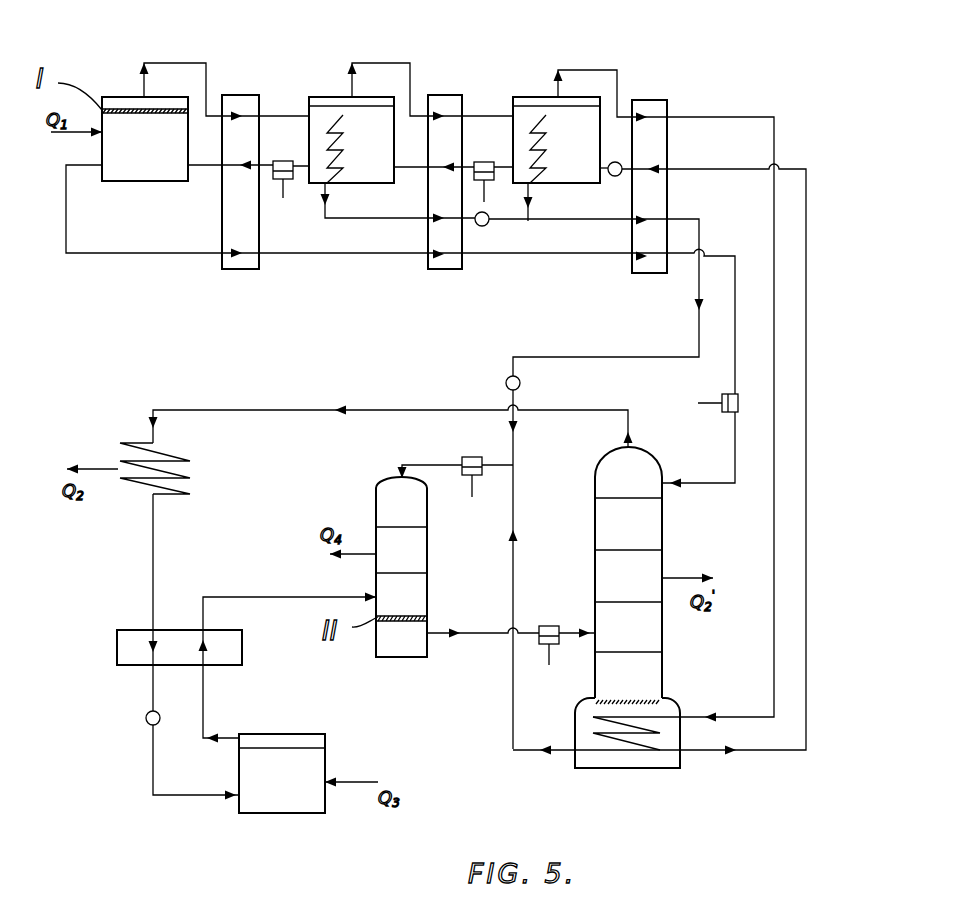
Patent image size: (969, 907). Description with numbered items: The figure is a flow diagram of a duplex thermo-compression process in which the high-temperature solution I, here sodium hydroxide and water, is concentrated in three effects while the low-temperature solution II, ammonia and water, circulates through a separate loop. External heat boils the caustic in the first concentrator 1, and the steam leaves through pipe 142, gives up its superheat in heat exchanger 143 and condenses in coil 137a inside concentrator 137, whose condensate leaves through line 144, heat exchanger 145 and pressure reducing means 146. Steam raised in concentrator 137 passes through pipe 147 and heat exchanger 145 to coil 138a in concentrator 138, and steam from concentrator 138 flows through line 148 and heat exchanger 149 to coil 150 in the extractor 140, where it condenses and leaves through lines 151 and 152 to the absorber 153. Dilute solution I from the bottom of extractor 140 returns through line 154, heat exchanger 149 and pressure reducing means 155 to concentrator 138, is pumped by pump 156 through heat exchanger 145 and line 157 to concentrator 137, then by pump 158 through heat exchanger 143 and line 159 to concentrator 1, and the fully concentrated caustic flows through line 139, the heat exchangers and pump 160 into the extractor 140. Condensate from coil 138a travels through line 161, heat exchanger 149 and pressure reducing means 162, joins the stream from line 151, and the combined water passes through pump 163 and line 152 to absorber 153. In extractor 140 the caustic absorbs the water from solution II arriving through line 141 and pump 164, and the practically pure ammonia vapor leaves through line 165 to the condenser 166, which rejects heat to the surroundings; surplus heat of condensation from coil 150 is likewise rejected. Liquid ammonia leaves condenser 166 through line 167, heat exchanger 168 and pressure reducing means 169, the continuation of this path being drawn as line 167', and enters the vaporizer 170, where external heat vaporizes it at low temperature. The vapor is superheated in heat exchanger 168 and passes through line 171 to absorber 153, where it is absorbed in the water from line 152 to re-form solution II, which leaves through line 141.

The first concentrator 1 is at (145, 139).
The second concentrator 137 is at (351, 140).
The steam coil 137a is at (358, 148).
The third concentrator 138 is at (556, 140).
The steam coil 138a is at (562, 148).
The solution line 139 is at (155, 253).
The extractor 140 is at (628, 572).
The solution II line 141 is at (487, 633).
The steam pipe 142 is at (189, 64).
The heat exchanger 143 is at (240, 182).
The condensate line 144 is at (388, 218).
The heat exchanger 145 is at (447, 182).
The pressure reducing means 146 is at (487, 225).
The steam pipe 147 is at (386, 56).
The steam line 148 is at (592, 66).
The heat exchanger 149 is at (650, 186).
The steam coil 150 is at (608, 735).
The condensate line 151 is at (510, 692).
The condensate line 152 is at (420, 458).
The absorber 153 is at (401, 567).
The dilute solution line 154 is at (732, 169).
The pressure reducing means 155 is at (618, 156).
The pump 156 is at (488, 154).
The solution line 157 is at (414, 160).
The pump 158 is at (285, 158).
The solution line 159 is at (207, 160).
The pump 160 is at (718, 392).
The condensate line 161 is at (606, 357).
The pressure reducing means 162 is at (506, 382).
The pump 163 is at (478, 452).
The pump 164 is at (548, 621).
The ammonia vapor line 165 is at (594, 410).
The condenser 166 is at (174, 468).
The condensate line 167 is at (130, 602).
The line 167' is at (196, 771).
The heat exchanger 168 is at (117, 646).
The pressure reducing means 169 is at (146, 718).
The vaporizer 170 is at (282, 773).
The ammonia vapor line 171 is at (292, 599).